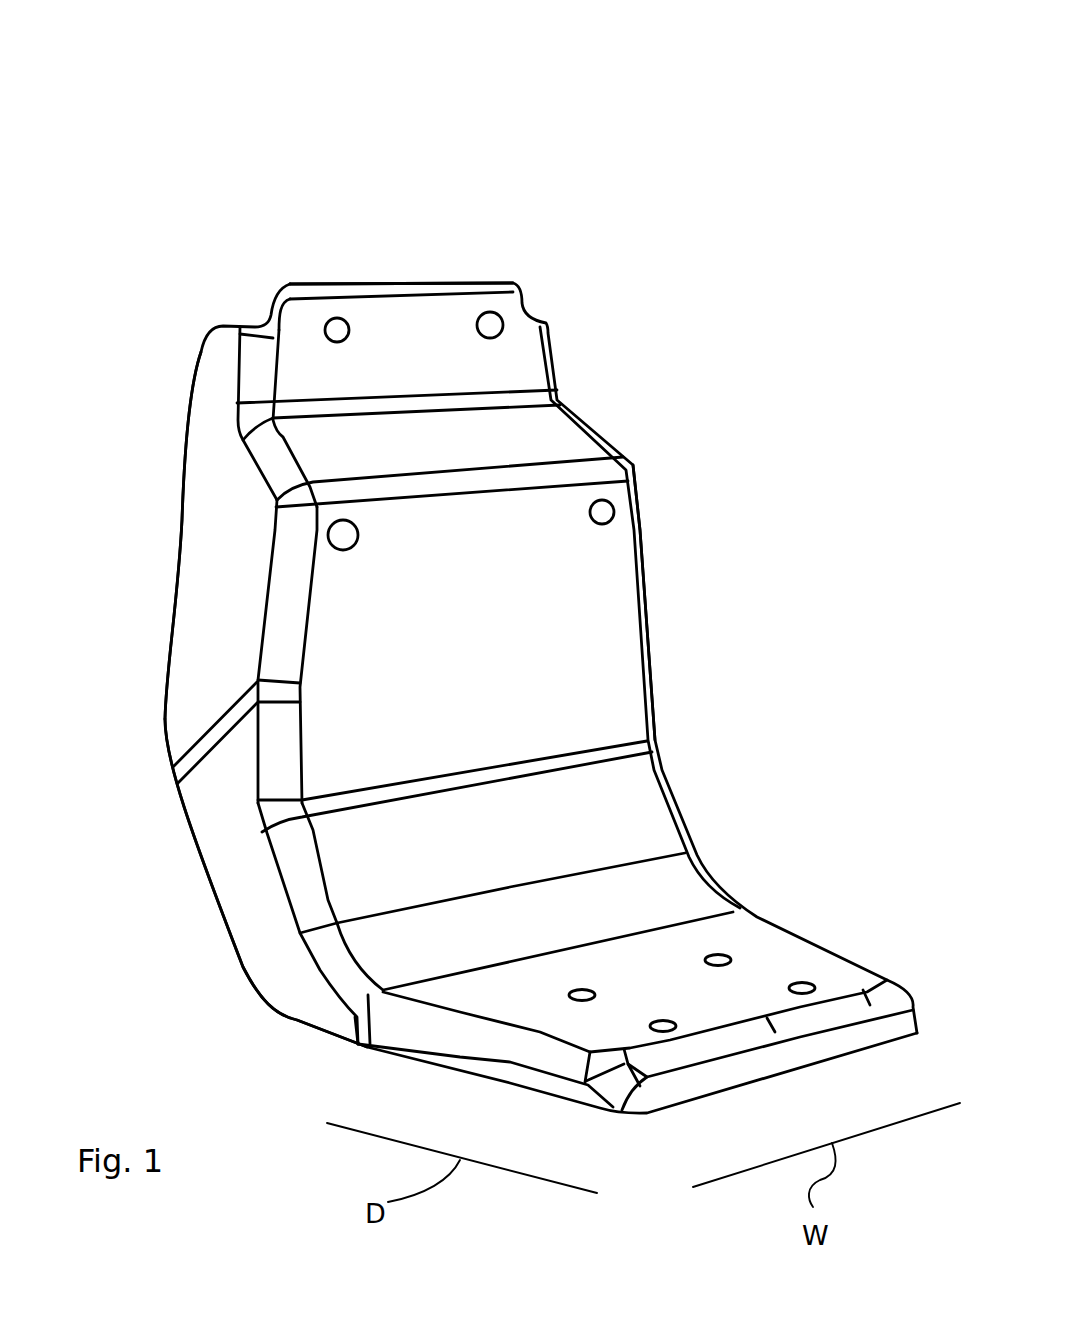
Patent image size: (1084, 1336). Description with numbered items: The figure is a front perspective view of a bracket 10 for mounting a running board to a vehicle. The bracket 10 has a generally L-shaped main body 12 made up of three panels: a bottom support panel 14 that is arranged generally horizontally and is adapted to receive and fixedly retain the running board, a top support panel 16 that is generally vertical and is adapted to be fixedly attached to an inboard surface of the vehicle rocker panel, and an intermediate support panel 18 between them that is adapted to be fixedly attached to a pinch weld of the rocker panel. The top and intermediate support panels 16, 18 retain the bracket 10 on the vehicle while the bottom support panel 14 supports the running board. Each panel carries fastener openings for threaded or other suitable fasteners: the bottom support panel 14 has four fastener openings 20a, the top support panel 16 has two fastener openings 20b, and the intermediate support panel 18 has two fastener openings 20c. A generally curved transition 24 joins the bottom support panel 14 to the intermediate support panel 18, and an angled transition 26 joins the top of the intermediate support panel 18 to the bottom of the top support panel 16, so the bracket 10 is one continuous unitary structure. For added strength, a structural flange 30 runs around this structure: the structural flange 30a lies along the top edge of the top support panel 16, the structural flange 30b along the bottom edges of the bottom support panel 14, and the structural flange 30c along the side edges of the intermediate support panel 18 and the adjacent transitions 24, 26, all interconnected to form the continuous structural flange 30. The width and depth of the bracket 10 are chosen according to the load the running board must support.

The bracket 10 is at (602, 192).
The main body 12 is at (650, 673).
The bottom support panel 14 is at (667, 983).
The top support panel 16 is at (400, 352).
The intermediate support panel 18 is at (468, 587).
The fastener openings 20a is at (582, 988).
The fastener openings 20b is at (483, 320).
The fastener openings 20c is at (610, 512).
The curved transition 24 is at (637, 832).
The angled transition 26 is at (367, 440).
The structural flange 30 is at (180, 804).
The structural flange 30a is at (323, 283).
The structural flange 30b is at (690, 1095).
The structural flange 30c is at (186, 642).